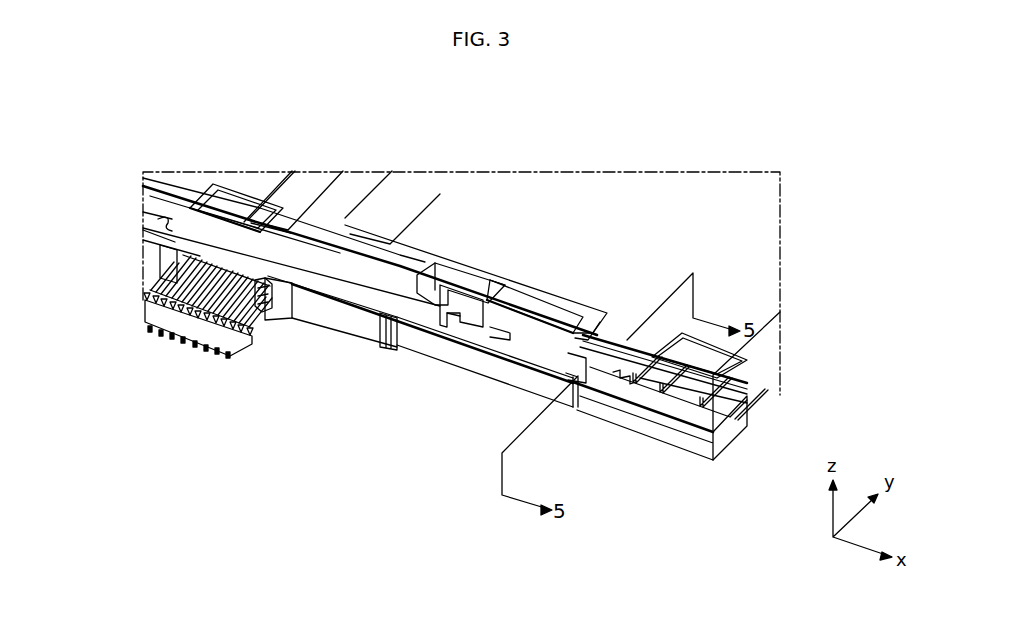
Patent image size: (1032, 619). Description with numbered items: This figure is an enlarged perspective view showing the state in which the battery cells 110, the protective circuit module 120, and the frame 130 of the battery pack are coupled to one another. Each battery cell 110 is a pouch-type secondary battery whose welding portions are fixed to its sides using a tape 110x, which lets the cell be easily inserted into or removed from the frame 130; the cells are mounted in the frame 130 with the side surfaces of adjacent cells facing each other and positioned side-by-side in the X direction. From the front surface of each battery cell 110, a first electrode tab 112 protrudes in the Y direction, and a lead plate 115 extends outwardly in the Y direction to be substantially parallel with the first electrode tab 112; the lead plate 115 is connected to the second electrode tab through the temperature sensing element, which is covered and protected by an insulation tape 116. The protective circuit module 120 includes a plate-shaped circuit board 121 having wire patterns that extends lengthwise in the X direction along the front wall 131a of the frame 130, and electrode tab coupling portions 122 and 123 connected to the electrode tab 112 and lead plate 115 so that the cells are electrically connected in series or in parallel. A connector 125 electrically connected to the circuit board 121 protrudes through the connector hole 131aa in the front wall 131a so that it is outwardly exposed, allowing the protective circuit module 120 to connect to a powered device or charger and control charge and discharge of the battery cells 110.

The battery cell 110 is at (740, 268).
The tape 110x is at (360, 186).
The first electrode tab 112 is at (581, 385).
The lead plate 115 is at (448, 322).
The insulation tape 116 is at (467, 272).
The protective circuit module 120 is at (366, 288).
The circuit board 121 is at (148, 230).
The electrode tab coupling portion 122 is at (600, 395).
The electrode tab coupling portion 123 is at (492, 336).
The connector 125 is at (185, 332).
The frame 130 is at (733, 427).
The front wall 131a is at (320, 318).
The connector hole 131aa is at (257, 305).